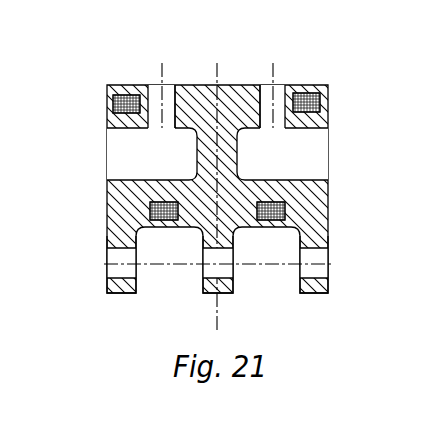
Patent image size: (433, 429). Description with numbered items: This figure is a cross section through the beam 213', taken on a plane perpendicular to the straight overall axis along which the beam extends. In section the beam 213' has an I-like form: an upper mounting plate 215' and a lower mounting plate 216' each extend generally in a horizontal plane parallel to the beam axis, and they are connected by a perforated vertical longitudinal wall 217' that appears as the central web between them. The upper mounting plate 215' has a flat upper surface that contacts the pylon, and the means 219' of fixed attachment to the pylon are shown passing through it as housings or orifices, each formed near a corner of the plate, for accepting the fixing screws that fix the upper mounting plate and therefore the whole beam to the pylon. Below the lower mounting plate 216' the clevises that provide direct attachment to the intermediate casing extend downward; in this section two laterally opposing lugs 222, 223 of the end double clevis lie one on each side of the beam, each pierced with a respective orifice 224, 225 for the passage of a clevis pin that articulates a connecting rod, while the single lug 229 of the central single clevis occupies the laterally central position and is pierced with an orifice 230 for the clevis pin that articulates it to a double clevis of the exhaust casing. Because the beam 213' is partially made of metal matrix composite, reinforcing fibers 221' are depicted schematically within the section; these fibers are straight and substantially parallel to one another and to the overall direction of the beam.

The beam 213' is at (167, 189).
The upper mounting plate 215' is at (217, 183).
The lower mounting plate 216' is at (314, 160).
The perforated vertical longitudinal wall 217' is at (122, 154).
The means of fixed attachment to the pylon 219' is at (215, 95).
The reinforcing fibers 221' is at (216, 158).
The lug 222 is at (124, 286).
The lug 223 is at (318, 287).
The orifice 224 is at (117, 253).
The orifice 225 is at (315, 252).
The single lug 229 is at (232, 297).
The orifice 230 is at (224, 271).